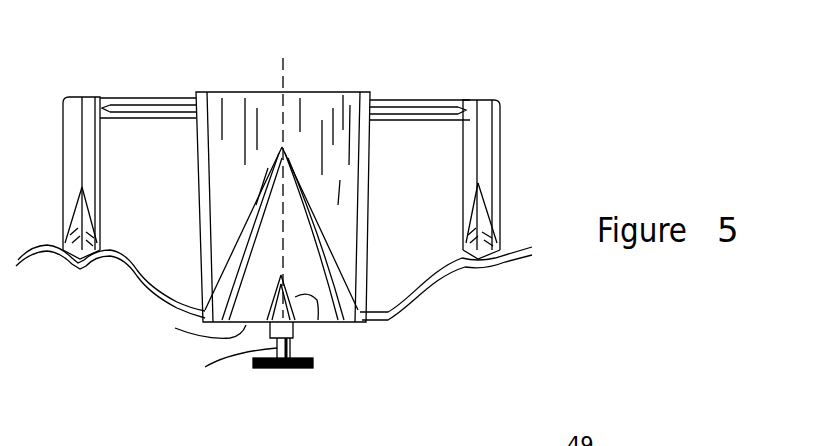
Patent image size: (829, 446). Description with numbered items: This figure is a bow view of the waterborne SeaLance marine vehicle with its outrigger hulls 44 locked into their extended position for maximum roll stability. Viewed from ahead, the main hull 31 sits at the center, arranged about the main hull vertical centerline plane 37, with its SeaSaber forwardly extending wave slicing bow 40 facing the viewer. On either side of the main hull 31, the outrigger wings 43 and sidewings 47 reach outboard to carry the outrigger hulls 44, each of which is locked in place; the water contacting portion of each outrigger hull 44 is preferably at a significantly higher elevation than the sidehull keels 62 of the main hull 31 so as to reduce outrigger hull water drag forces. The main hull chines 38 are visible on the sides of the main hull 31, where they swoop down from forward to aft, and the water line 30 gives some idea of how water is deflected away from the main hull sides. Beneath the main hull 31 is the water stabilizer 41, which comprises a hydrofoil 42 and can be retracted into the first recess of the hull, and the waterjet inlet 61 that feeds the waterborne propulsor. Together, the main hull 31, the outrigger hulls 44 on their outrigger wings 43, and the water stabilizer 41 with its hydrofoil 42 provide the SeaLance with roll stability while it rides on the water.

The water line 30 is at (117, 247).
The main hull 31 is at (265, 90).
The main hull vertical centerline plane 37 is at (283, 70).
The main hull chines 38 is at (240, 213).
The wave slicing bow 40 is at (320, 322).
The water stabilizer 41 is at (221, 365).
The hydrofoil 42 is at (313, 366).
The outrigger wings 43 is at (113, 97).
The outrigger hull 44 is at (93, 187).
The sidewings 47 is at (150, 103).
The waterjet inlet 61 is at (297, 343).
The sidehull keels 62 is at (193, 324).